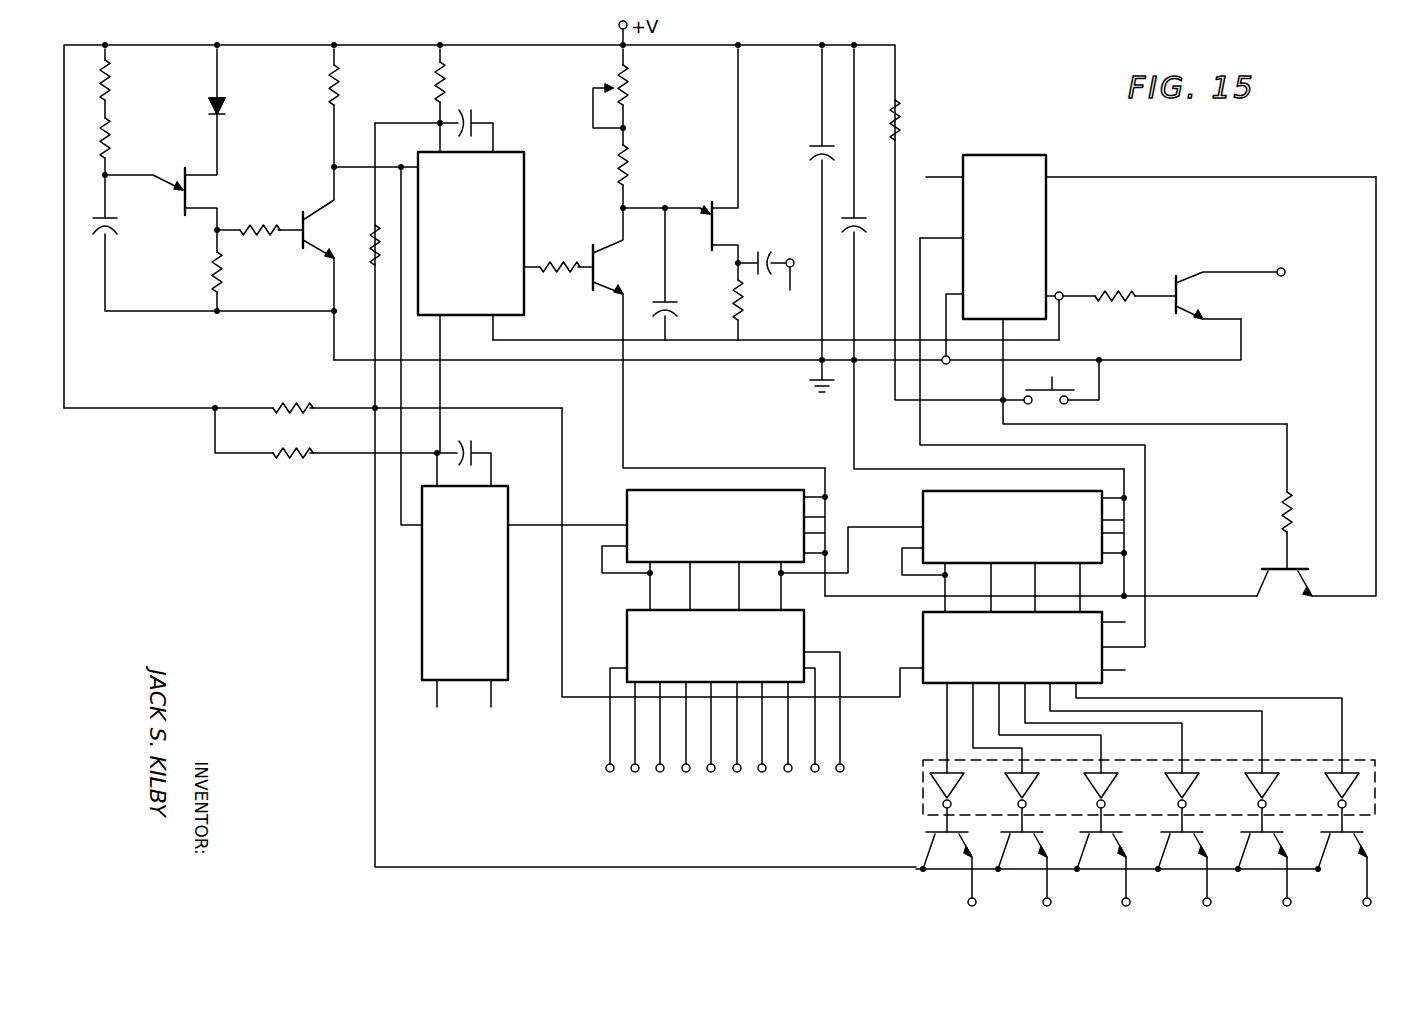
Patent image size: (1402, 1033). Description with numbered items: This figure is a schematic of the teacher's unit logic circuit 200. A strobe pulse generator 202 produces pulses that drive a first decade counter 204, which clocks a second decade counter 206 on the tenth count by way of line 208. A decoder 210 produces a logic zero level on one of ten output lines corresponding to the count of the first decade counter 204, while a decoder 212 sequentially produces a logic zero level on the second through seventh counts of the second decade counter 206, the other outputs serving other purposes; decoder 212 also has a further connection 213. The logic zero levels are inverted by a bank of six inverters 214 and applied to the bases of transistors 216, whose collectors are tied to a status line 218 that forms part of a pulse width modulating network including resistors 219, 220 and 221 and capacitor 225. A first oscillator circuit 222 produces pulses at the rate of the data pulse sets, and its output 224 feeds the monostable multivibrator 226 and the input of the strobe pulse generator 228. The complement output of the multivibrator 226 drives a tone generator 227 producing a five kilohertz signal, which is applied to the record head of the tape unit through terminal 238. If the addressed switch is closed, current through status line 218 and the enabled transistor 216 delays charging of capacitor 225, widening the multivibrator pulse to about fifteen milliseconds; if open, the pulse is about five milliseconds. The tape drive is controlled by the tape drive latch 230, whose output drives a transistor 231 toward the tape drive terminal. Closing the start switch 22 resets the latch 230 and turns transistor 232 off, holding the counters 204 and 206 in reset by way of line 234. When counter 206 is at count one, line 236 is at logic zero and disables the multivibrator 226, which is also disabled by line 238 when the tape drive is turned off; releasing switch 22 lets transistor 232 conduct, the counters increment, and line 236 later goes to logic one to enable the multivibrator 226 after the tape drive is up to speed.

The recording circuit 200 is at (955, 117).
The strobe pulse generator 202 is at (490, 500).
The first decade counter 204 is at (645, 497).
The second decade counter 206 is at (940, 503).
The line 208 is at (893, 527).
The decoder 210 is at (645, 635).
The decoder 212 is at (935, 636).
The reset line 213 is at (1150, 633).
The bank of six inverters 214 is at (935, 790).
The transistors 216 is at (925, 845).
The status line 218 is at (375, 784).
The resistor 219 is at (286, 406).
The resistor 220 is at (372, 250).
The resistor 221 is at (448, 86).
The first oscillator circuit 222 is at (293, 171).
The output 224 is at (352, 166).
The capacitor 225 is at (480, 124).
The monostable multivibrator 226 is at (512, 177).
The tone generator 227 is at (690, 171).
The strobe pulse generator 228 is at (769, 284).
The tape drive latch 230 is at (1050, 228).
The transistor 231 is at (1190, 269).
The transistor 232 is at (1286, 578).
The line 234 is at (1158, 596).
The line 236 is at (580, 699).
The terminal 238 is at (528, 341).
The START switch 22 is at (1060, 388).